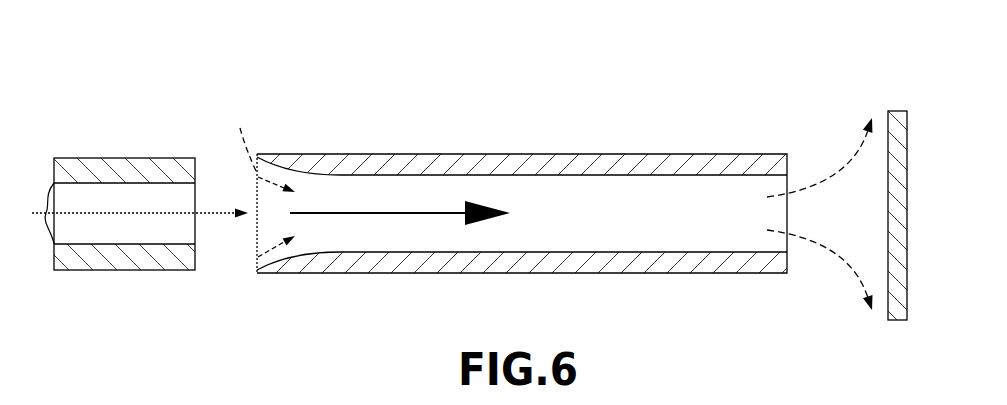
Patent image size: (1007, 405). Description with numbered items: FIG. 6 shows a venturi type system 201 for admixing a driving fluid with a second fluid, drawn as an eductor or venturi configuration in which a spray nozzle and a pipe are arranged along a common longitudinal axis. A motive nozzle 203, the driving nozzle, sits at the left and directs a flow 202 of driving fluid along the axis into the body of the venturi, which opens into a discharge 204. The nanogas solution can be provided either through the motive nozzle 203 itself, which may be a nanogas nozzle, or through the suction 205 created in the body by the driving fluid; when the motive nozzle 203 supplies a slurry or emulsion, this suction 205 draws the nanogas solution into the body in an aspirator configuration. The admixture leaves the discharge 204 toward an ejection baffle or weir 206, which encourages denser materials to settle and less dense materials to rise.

The light beam homogenizer assembly 201 is at (214, 82).
The light beam 202 is at (291, 213).
The motive nozzle 203 is at (117, 147).
The discharge 204 is at (468, 143).
The suction 205 is at (257, 173).
The ejection baffle or weir 206 is at (917, 220).